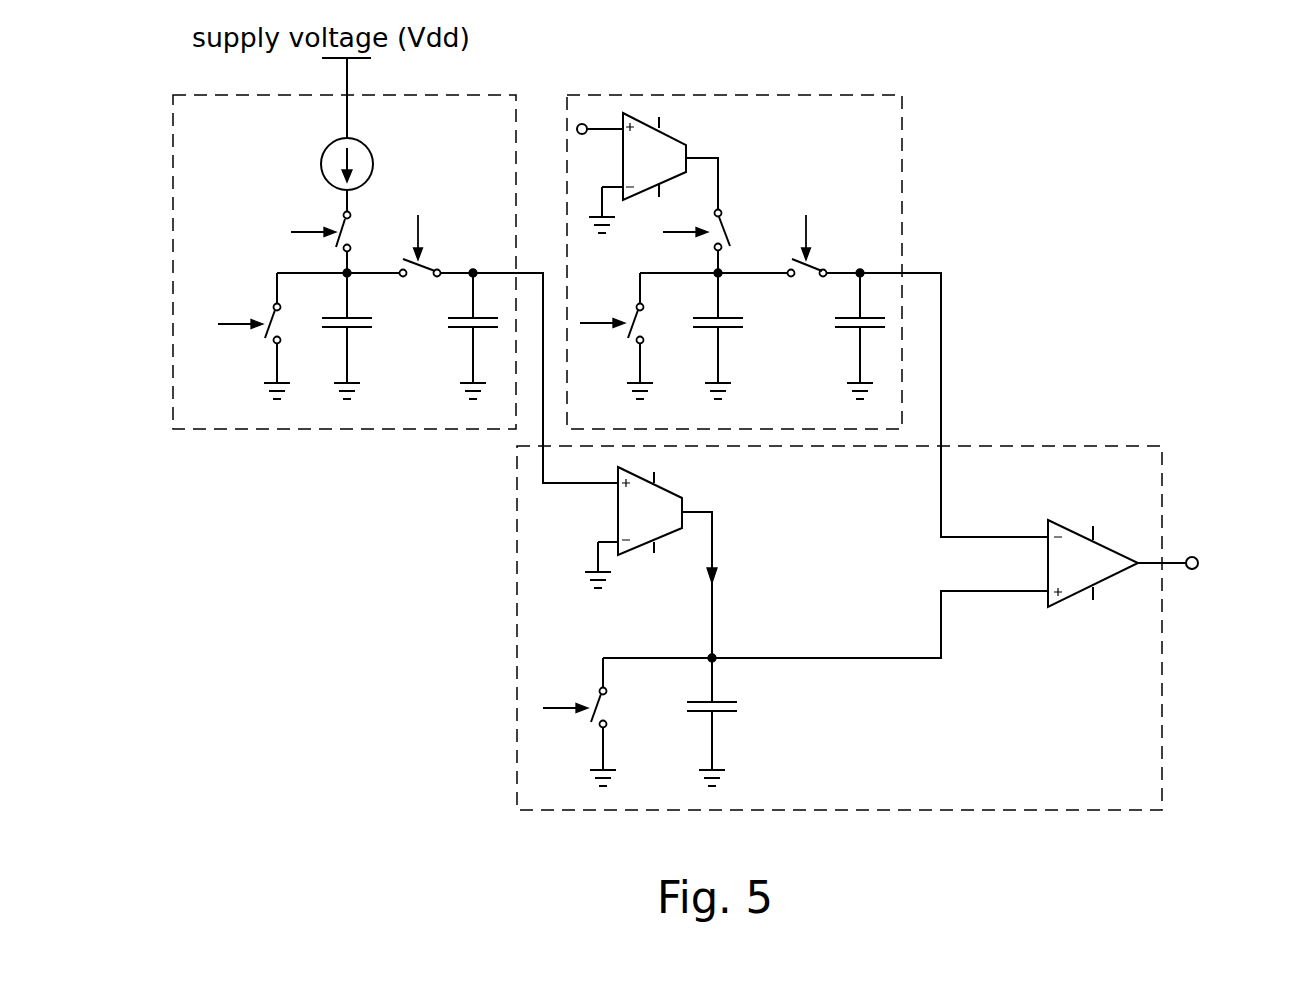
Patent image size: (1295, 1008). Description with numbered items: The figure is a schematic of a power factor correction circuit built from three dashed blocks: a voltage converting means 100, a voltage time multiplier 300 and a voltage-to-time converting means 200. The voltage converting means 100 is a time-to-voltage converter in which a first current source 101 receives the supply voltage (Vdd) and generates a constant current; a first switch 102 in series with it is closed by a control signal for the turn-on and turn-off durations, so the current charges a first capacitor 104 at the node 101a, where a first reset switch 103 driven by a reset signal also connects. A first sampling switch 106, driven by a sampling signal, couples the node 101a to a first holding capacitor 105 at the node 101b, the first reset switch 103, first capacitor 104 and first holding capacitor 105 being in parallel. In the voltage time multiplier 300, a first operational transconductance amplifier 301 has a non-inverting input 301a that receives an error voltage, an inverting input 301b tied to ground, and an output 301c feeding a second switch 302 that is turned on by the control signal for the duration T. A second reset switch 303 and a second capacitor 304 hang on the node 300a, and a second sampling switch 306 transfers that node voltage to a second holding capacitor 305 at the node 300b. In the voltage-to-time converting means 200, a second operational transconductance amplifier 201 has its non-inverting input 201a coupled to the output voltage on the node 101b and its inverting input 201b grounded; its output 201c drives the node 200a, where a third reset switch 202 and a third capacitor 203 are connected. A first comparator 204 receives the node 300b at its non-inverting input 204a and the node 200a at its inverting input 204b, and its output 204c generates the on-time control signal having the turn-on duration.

The voltage converting means 100 is at (173, 95).
The first current source 101 is at (325, 155).
The first switch 102 is at (341, 222).
The first reset switch 103 is at (270, 312).
The first capacitor 104 is at (337, 327).
The first holding capacitor 105 is at (455, 327).
The first sampling switch 106 is at (428, 260).
The node 101a is at (347, 273).
The node 101b is at (473, 273).
The voltage time multiplier 300 is at (902, 95).
The first operational transconductance amplifier 301 is at (654, 156).
The non-inverting input 301a is at (623, 126).
The inverting input 301b is at (622, 187).
The output 301c is at (687, 152).
The second switch 302 is at (727, 233).
The second reset switch 303 is at (642, 316).
The second capacitor 304 is at (730, 328).
The second holding capacitor 305 is at (875, 328).
The second sampling switch 306 is at (810, 262).
The node 300a is at (718, 273).
The node 300b is at (860, 272).
The voltage-to-time converting means 200 is at (1162, 446).
The second operational transconductance amplifier 201 is at (650, 511).
The non-inverting input 201a is at (618, 487).
The inverting input 201b is at (618, 538).
The output 201c is at (683, 510).
The third reset switch 202 is at (597, 702).
The third capacitor 203 is at (723, 715).
The node 200a is at (712, 658).
The first comparator 204 is at (1093, 563).
The non-inverting input 204a is at (1048, 537).
The inverting input 204b is at (1048, 591).
The output 204c is at (1150, 567).